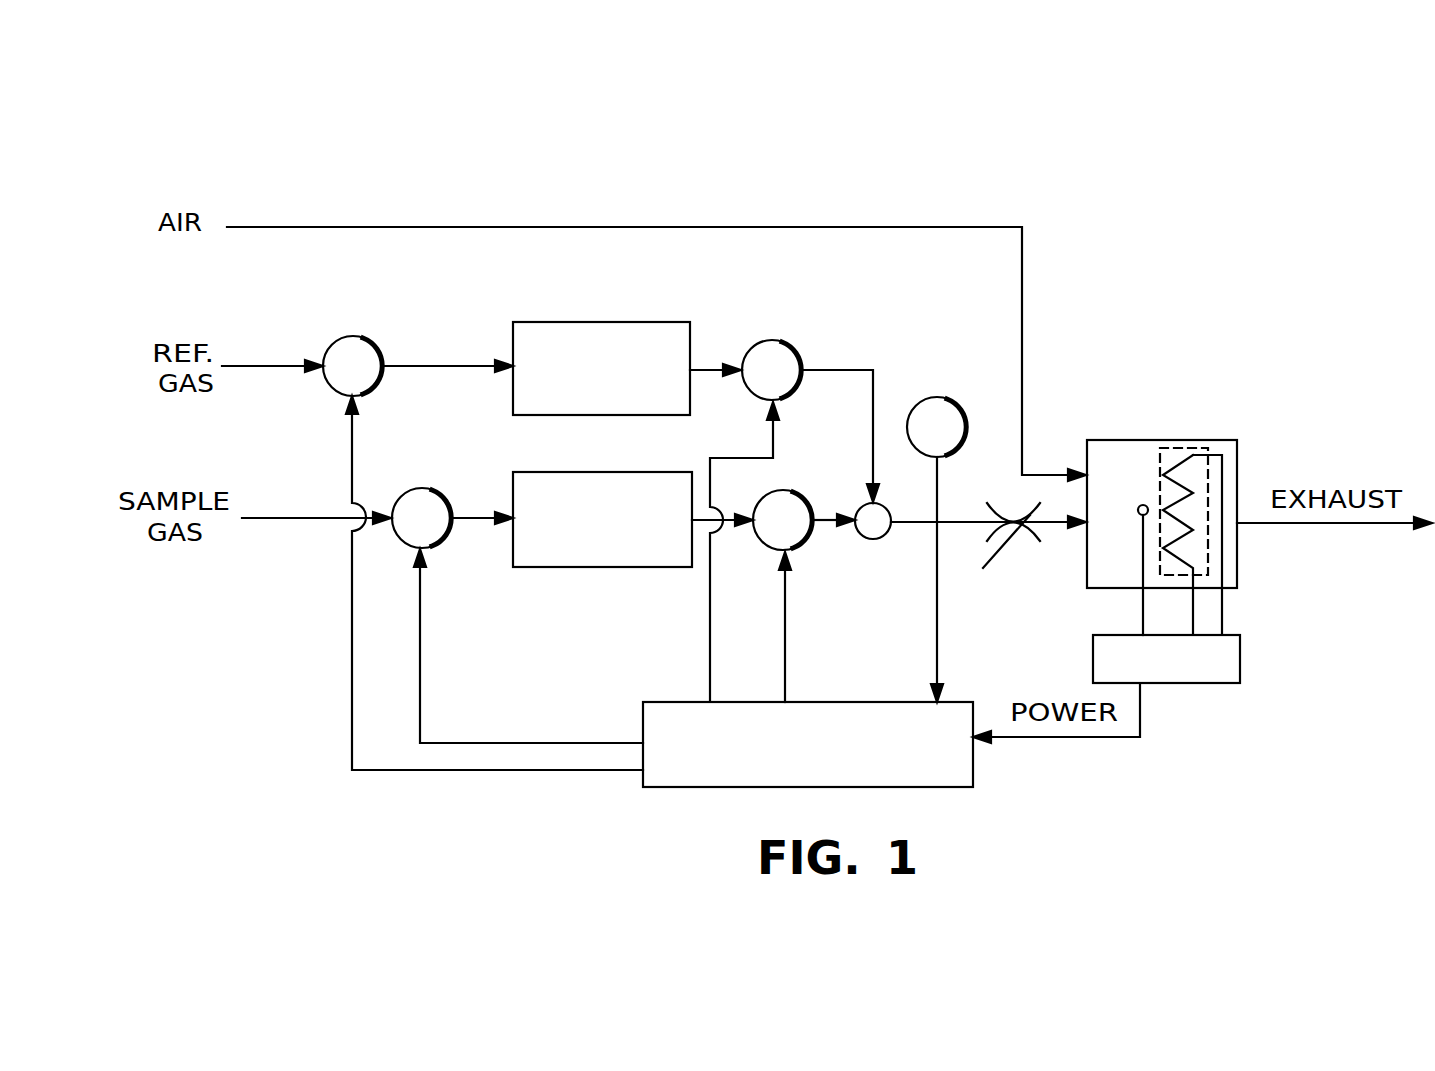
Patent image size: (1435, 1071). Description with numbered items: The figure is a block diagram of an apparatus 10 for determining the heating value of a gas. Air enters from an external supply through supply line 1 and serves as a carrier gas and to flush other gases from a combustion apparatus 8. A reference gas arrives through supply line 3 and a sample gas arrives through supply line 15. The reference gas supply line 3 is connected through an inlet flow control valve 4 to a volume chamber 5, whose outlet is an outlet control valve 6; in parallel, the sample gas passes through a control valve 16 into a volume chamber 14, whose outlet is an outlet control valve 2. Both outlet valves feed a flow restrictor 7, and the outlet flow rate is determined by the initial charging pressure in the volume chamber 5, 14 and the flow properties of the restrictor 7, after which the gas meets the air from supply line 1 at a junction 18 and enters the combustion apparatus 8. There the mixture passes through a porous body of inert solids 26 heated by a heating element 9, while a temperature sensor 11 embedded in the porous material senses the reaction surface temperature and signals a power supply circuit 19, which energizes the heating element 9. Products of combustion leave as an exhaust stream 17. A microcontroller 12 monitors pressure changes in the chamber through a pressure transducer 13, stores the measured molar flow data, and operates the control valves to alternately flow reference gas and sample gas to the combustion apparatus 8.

The supply line 1 is at (478, 227).
The outlet control valve 2 is at (803, 488).
The supply line 3 is at (283, 362).
The inlet flow control valve 4 is at (358, 334).
The volume chamber 5 is at (590, 320).
The outlet control valve 6 is at (785, 338).
The flow restrictor 7 is at (988, 553).
The combustion apparatus 8 is at (1186, 430).
The heating element 9 is at (1173, 468).
The apparatus 10 is at (1098, 295).
The temperature sensor 11 is at (1138, 518).
The microcontroller 12 is at (688, 698).
The pressure transducer 13 is at (955, 392).
The volume chamber 14 is at (597, 472).
The supply line 15 is at (318, 517).
The control valve 16 is at (412, 487).
The exhaust stream 17 is at (1295, 527).
The junction 18 is at (870, 543).
The power supply circuit 19 is at (1177, 671).
The porous body of inert solids 26 is at (1160, 493).